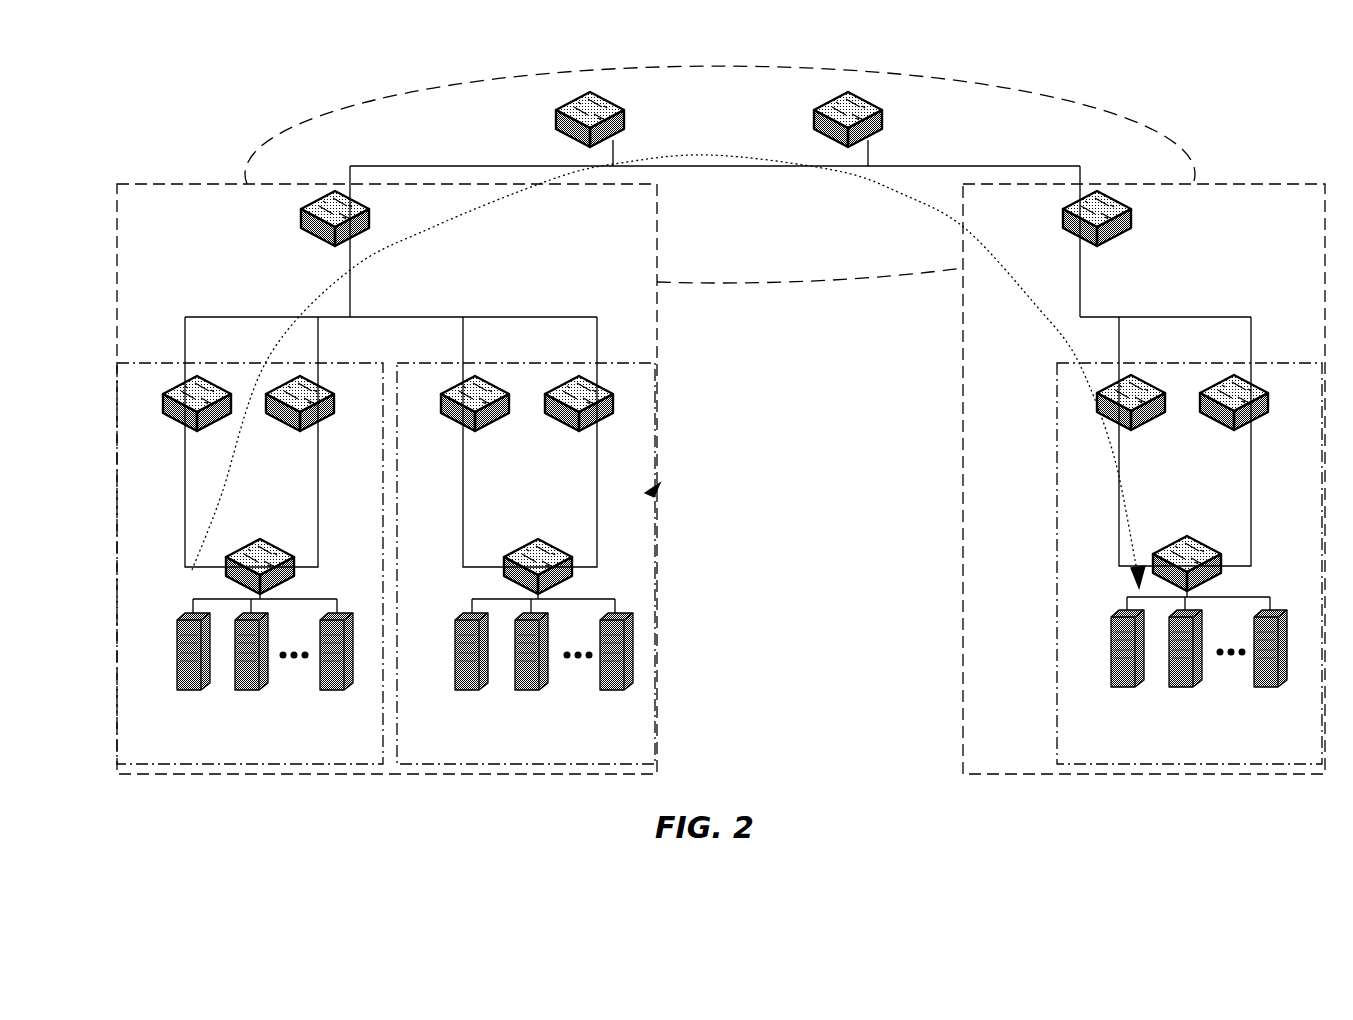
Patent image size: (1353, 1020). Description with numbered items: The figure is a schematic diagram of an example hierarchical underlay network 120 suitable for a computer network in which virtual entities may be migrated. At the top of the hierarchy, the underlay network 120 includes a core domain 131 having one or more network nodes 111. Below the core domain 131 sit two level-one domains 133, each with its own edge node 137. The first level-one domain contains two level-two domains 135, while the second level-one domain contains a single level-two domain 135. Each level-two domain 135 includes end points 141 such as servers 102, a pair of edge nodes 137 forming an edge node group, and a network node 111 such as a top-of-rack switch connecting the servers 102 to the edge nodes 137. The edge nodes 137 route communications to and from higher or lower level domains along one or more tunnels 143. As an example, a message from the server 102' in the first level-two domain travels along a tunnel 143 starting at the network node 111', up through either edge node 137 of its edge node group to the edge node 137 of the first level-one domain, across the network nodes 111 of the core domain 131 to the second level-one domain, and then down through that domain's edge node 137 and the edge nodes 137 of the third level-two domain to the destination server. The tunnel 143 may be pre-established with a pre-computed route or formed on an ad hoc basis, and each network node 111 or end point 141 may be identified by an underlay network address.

The hierarchical underlay network 120 is at (1228, 128).
The core domain 131 is at (1100, 112).
The level-one domain 133 is at (215, 182).
The level-two domain 135 is at (117, 712).
The network node 111 is at (711, 339).
The network node 111' is at (249, 549).
The edge node 137 is at (699, 335).
The server 102 is at (551, 646).
The server 102' is at (239, 647).
The end point 141 is at (655, 490).
The tunnel 143 is at (905, 195).